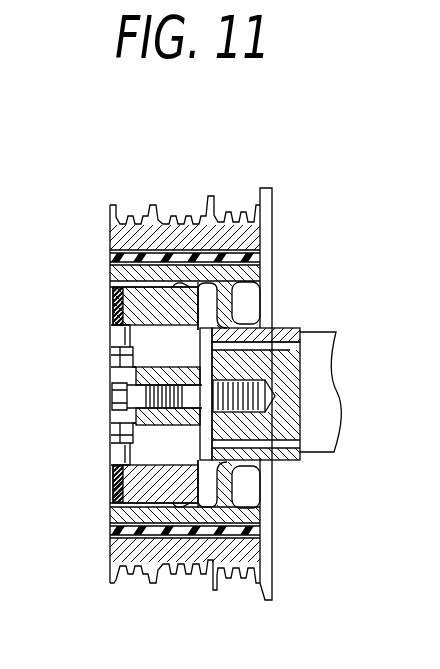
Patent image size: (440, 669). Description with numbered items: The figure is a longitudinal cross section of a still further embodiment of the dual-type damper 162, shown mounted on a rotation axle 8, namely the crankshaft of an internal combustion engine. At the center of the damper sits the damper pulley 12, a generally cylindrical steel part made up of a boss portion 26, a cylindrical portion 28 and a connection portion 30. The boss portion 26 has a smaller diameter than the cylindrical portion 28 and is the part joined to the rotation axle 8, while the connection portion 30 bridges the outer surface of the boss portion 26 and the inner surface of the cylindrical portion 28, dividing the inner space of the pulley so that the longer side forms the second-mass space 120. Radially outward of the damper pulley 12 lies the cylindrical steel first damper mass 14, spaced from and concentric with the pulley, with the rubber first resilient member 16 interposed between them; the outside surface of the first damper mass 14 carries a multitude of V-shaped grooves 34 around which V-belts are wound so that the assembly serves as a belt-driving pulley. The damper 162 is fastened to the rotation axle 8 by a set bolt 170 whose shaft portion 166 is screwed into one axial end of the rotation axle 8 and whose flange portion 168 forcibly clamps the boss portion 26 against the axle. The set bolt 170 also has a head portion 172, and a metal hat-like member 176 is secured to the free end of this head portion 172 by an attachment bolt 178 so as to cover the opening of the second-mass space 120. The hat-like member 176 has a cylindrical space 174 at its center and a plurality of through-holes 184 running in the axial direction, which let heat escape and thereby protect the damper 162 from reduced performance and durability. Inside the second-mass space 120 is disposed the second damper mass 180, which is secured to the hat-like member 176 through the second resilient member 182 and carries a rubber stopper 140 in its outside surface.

The dual-type damper 162 is at (241, 142).
The V-shaped grooves 34 is at (236, 200).
The first damper mass 14 is at (253, 231).
The first resilient member 16 is at (257, 258).
The hat-like member 176 is at (108, 291).
The second resilient member 182 is at (111, 300).
The through-holes 184 is at (115, 455).
The cylindrical space 174 is at (111, 357).
The head portion 172 is at (130, 365).
The attachment bolt 178 is at (108, 412).
The second-mass space 120 is at (115, 432).
The set bolt 170 is at (115, 489).
The second damper mass 180 is at (118, 500).
The rubber stopper 140 is at (182, 292).
The flange portion 168 is at (123, 485).
The damper pulley 12 is at (283, 326).
The boss portion 26 is at (283, 453).
The shaft portion 166 is at (245, 392).
The rotation axle 8 is at (320, 326).
The connection portion 30 is at (227, 482).
The cylindrical portion 28 is at (243, 510).